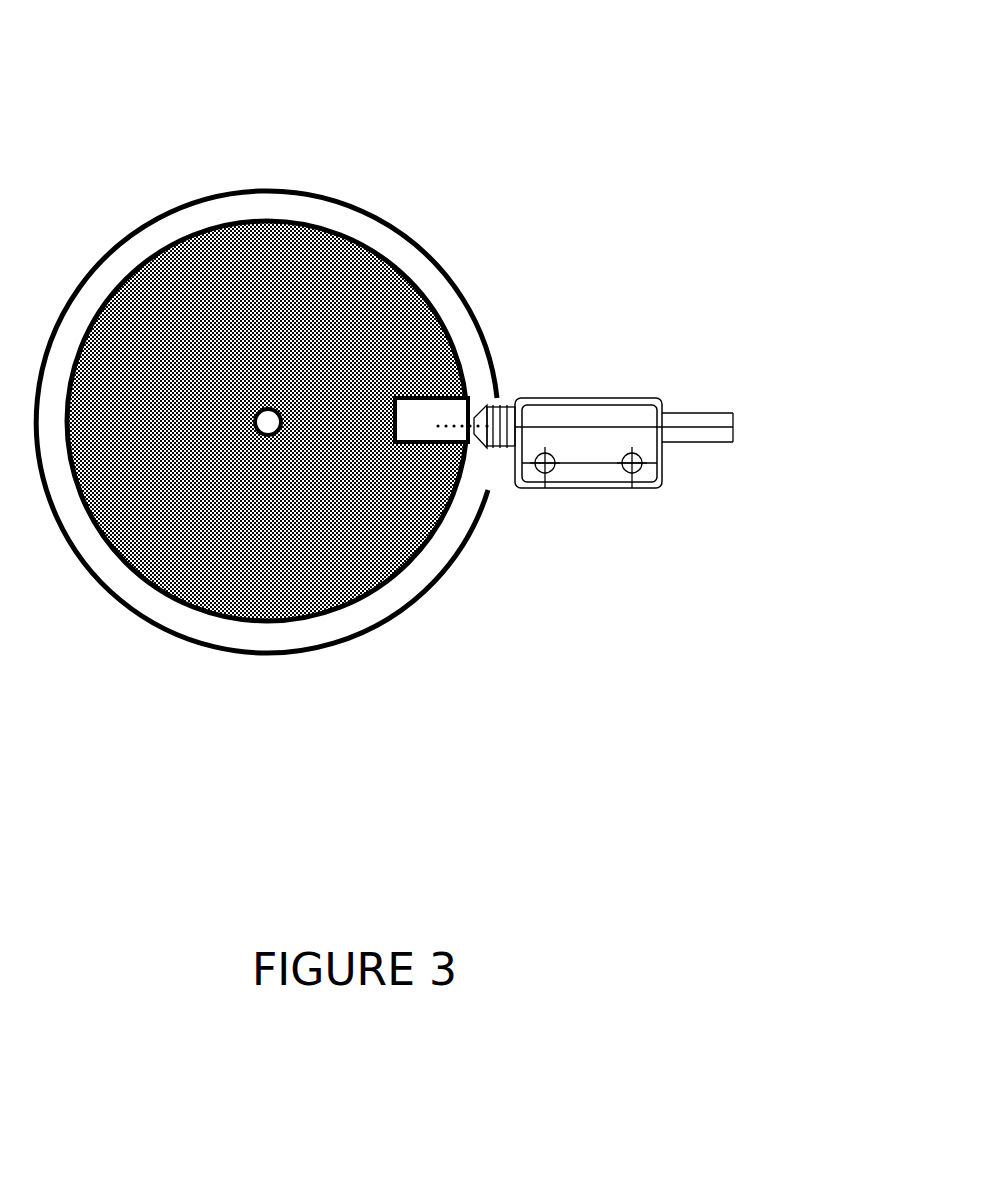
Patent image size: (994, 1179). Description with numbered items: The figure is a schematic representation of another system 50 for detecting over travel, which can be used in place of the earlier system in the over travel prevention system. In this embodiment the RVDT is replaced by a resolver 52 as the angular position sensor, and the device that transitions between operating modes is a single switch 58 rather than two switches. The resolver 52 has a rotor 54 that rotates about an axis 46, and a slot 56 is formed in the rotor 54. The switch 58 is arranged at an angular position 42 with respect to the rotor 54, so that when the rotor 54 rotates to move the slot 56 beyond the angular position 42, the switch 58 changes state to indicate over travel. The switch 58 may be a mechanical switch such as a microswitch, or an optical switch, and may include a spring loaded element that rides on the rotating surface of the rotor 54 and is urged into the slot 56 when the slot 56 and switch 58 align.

The system for detecting over travel 50 is at (513, 127).
The resolver 52 is at (182, 205).
The rotor 54 is at (323, 375).
The axis 46 is at (268, 422).
The slot 56 is at (427, 433).
The angular position 42 is at (457, 423).
The switch 58 is at (607, 488).